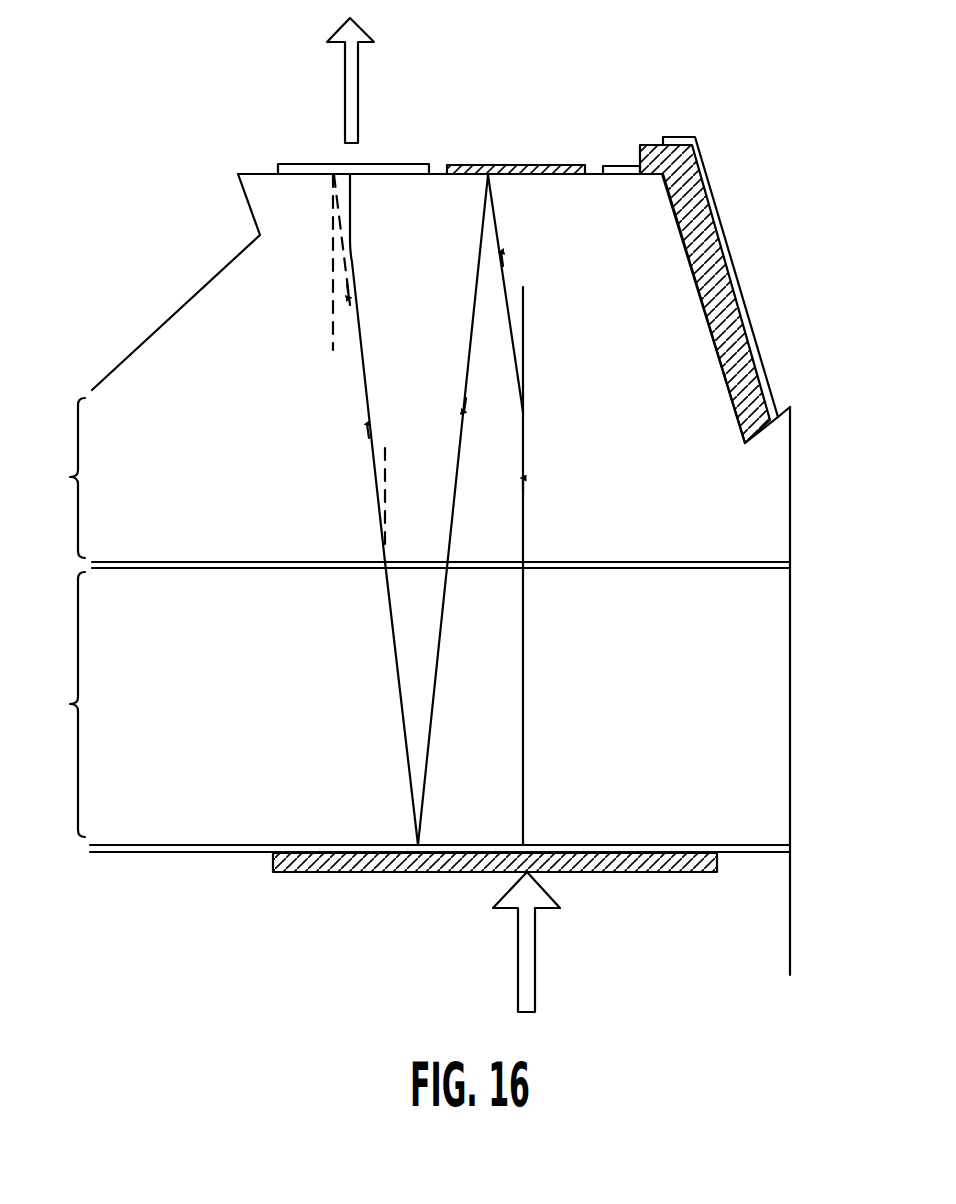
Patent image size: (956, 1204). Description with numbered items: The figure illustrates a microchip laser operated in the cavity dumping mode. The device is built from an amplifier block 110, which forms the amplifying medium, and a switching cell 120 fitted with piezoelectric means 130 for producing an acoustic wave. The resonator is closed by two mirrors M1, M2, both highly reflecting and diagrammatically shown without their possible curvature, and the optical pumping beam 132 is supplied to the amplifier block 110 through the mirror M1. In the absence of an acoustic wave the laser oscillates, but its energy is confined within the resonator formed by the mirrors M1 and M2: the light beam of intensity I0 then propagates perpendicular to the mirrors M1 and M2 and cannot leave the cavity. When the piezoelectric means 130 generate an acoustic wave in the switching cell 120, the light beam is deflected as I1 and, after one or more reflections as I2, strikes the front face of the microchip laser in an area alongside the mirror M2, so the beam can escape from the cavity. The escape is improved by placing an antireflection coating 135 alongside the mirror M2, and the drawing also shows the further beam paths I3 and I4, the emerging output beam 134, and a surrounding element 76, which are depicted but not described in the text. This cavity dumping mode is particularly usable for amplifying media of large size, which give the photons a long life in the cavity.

The antireflection coating 135 is at (298, 163).
The output light beam 134 is at (353, 78).
The mirror M2 is at (550, 166).
The piezoelectric means 130 is at (700, 215).
The housing wall 76 is at (752, 283).
The light beam intensity I0 is at (523, 330).
The deflected light beam I1 is at (500, 225).
The reflected light beam I2 is at (475, 302).
The third beam I3 is at (375, 502).
The exit beam I4 is at (352, 250).
The switching cell 120 is at (49, 478).
The amplifier block 110 is at (49, 704).
The optical pumping beam 132 is at (523, 955).
The mirror M1 is at (675, 862).